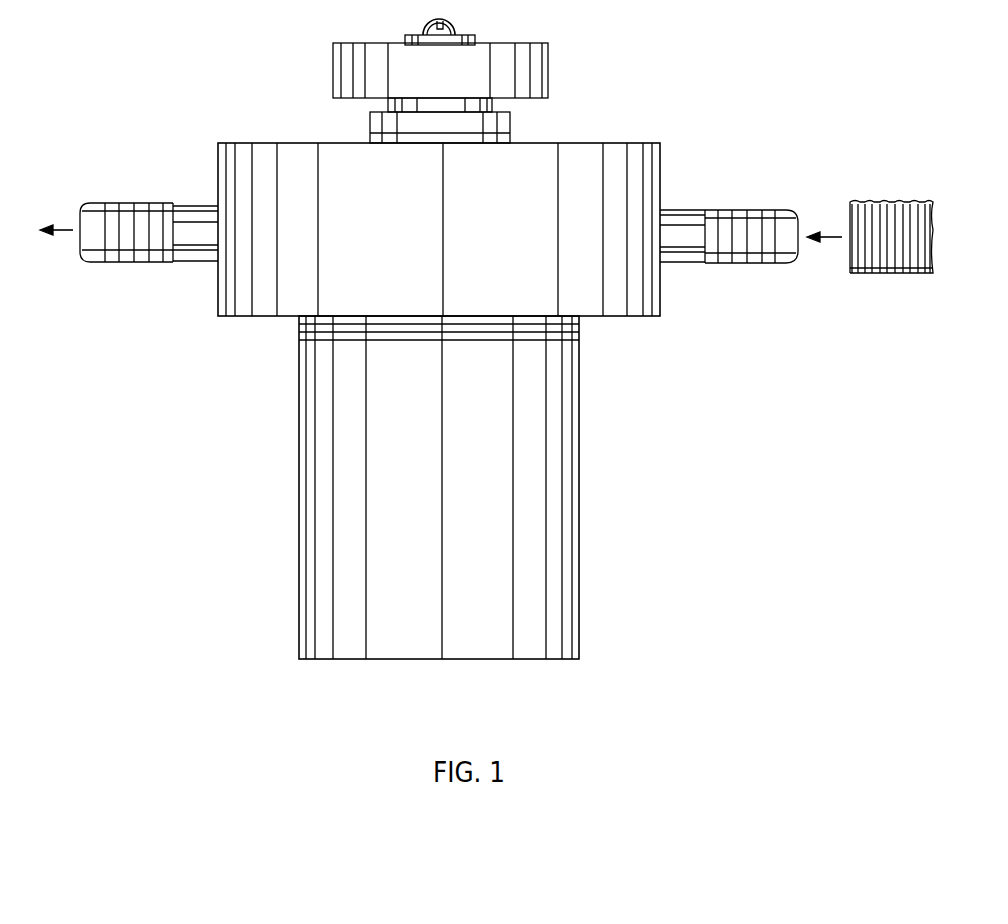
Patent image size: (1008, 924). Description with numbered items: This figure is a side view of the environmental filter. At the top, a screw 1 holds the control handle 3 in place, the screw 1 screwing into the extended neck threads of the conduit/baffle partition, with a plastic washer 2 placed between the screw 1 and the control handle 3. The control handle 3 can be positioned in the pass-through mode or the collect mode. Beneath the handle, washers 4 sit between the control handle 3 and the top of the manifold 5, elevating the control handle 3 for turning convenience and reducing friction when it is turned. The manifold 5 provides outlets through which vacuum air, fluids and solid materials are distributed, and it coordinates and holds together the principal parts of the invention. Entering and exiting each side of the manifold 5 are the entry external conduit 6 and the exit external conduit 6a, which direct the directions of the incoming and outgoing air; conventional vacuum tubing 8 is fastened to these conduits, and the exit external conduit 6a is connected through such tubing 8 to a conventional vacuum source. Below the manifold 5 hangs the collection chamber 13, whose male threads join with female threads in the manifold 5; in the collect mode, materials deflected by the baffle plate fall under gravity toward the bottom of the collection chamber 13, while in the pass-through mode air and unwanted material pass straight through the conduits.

The screw 1 is at (448, 22).
The plastic washer 2 is at (472, 33).
The control handle 3 is at (528, 43).
The washers 4 is at (520, 98).
The manifold 5 is at (622, 143).
The entry external conduit 6 is at (738, 208).
The exit external conduit 6a is at (112, 203).
The vacuum tubing 8 is at (892, 202).
The collection chamber 13 is at (579, 448).